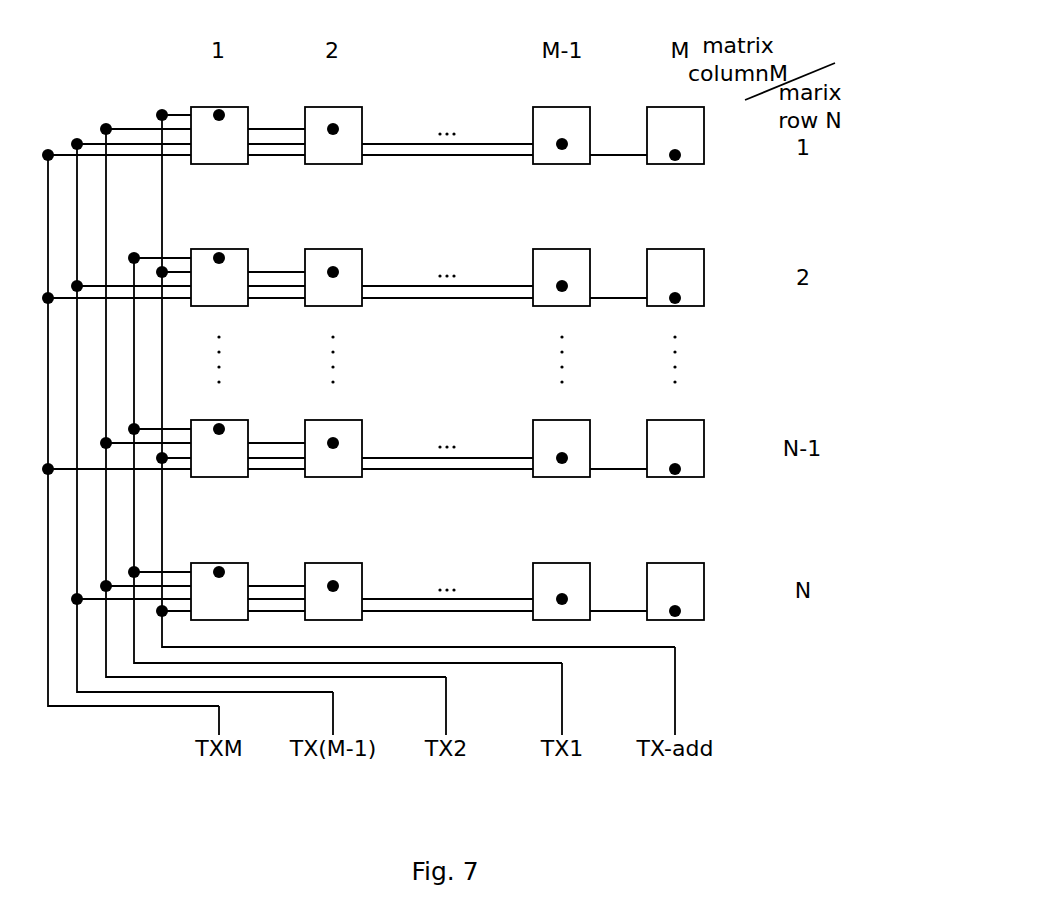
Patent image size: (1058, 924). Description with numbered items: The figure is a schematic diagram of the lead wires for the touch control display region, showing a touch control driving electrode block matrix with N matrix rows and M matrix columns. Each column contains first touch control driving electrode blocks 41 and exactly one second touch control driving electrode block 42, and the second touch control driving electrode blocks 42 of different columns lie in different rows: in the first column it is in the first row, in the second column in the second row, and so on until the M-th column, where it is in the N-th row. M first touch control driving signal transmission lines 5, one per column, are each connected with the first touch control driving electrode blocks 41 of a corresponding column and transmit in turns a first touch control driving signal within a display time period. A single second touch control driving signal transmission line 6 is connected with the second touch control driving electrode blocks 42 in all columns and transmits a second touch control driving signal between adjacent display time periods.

The first touch control driving electrode block 41 is at (602, 553).
The second touch control driving electrode block 42 is at (716, 553).
The first touch control driving signal transmission line 5 is at (592, 677).
The second touch control driving signal transmission line 6 is at (675, 677).